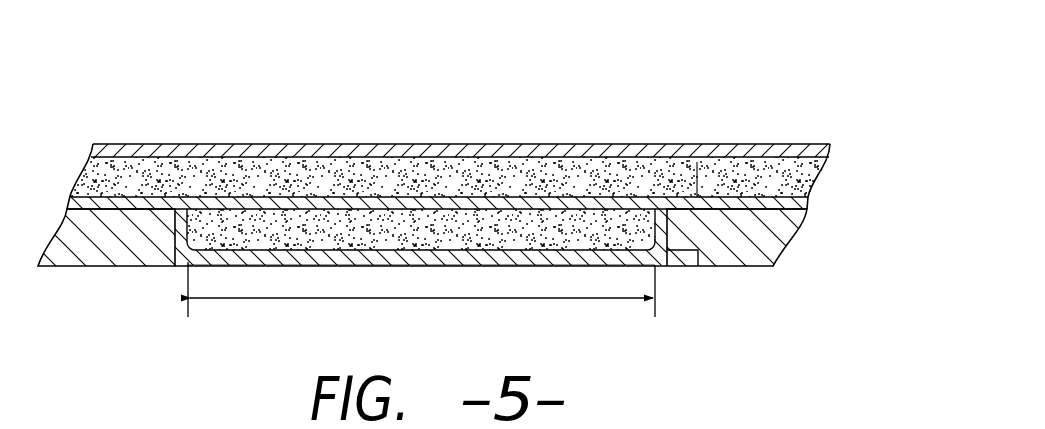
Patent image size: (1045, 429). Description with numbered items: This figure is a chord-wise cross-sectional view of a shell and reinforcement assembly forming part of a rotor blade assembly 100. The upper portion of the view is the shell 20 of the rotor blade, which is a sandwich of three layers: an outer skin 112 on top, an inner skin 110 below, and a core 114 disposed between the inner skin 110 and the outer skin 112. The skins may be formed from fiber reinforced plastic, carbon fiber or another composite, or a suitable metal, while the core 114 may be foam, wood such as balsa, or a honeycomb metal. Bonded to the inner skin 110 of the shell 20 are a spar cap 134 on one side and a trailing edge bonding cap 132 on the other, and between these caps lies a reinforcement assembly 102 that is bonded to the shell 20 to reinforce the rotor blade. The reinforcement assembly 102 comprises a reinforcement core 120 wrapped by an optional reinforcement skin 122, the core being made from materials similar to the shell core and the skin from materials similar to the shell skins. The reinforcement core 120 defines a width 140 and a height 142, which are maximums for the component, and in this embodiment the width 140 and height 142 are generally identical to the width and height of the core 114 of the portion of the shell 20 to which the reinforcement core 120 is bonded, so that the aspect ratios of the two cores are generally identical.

The rotor blade assembly 100 is at (439, 184).
The shell 20 is at (448, 143).
The outer skin 112 is at (407, 150).
The core 114 is at (522, 177).
The inner skin 110 is at (583, 203).
The spar cap 134 is at (142, 280).
The trailing edge bonding cap 132 is at (750, 277).
The height 142 is at (696, 268).
The reinforcement skin 122 is at (348, 255).
The reinforcement core 120 is at (250, 233).
The reinforcement assembly 102 is at (462, 267).
The width 140 is at (563, 300).